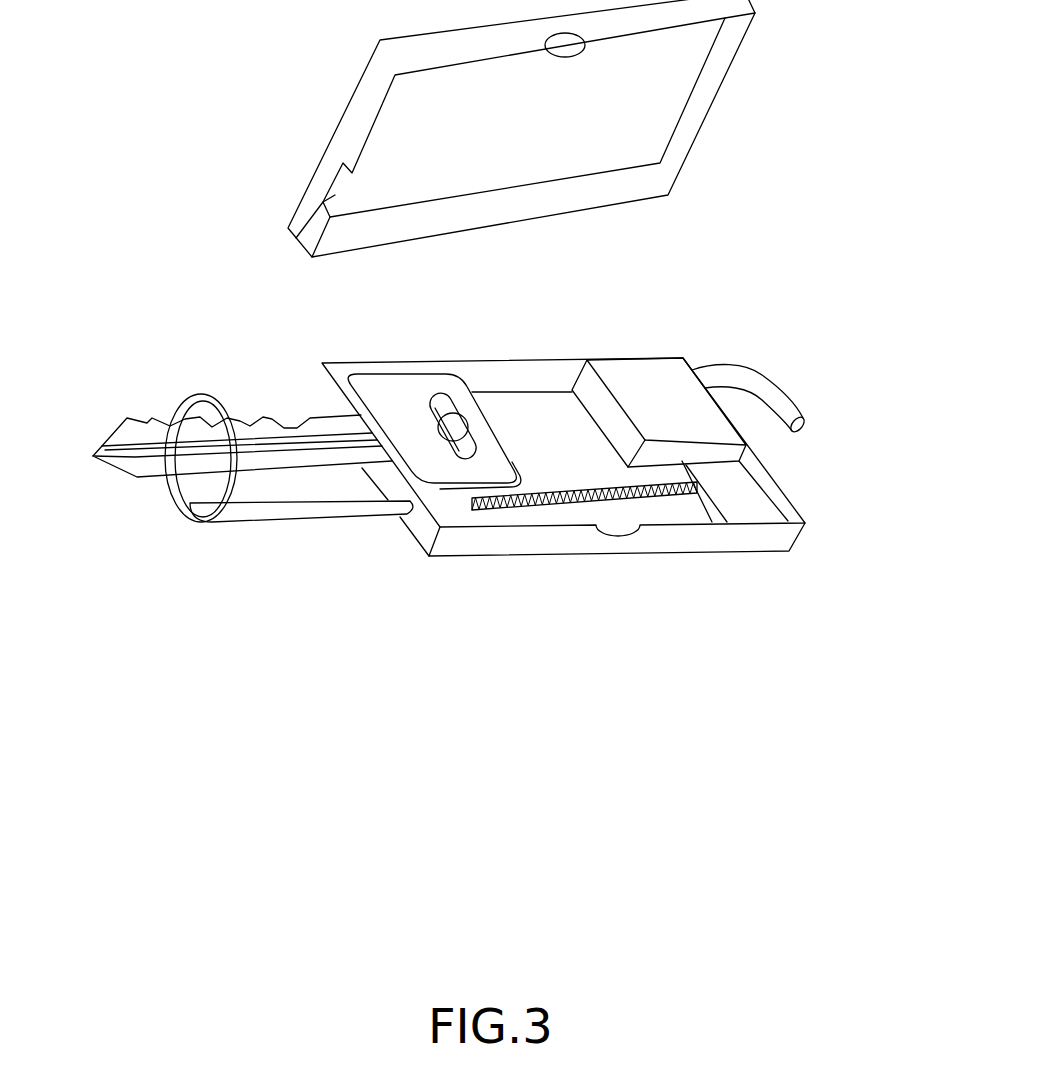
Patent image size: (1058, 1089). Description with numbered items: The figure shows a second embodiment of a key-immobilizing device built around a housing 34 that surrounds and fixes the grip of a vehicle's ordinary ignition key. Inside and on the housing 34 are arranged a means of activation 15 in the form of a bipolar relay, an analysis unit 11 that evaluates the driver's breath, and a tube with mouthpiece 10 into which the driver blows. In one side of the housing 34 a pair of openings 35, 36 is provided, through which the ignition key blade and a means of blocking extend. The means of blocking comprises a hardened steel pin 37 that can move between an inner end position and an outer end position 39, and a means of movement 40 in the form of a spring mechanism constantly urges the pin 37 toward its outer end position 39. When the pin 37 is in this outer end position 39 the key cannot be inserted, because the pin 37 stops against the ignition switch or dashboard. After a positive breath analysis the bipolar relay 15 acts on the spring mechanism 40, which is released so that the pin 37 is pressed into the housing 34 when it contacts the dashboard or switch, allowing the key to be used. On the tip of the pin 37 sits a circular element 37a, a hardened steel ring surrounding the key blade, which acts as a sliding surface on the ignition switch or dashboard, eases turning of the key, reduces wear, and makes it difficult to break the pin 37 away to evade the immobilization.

The tube with mouthpiece 10 is at (763, 392).
The analysis unit 11 is at (618, 377).
The means of activation 15 is at (743, 495).
The housing 34 is at (723, 317).
The opening 35 is at (288, 228).
The opening 36 is at (408, 512).
The hardened steel pin 37 is at (243, 515).
The circular element 37a is at (168, 397).
The outer end position 39 is at (238, 462).
The means of movement 40 is at (558, 503).